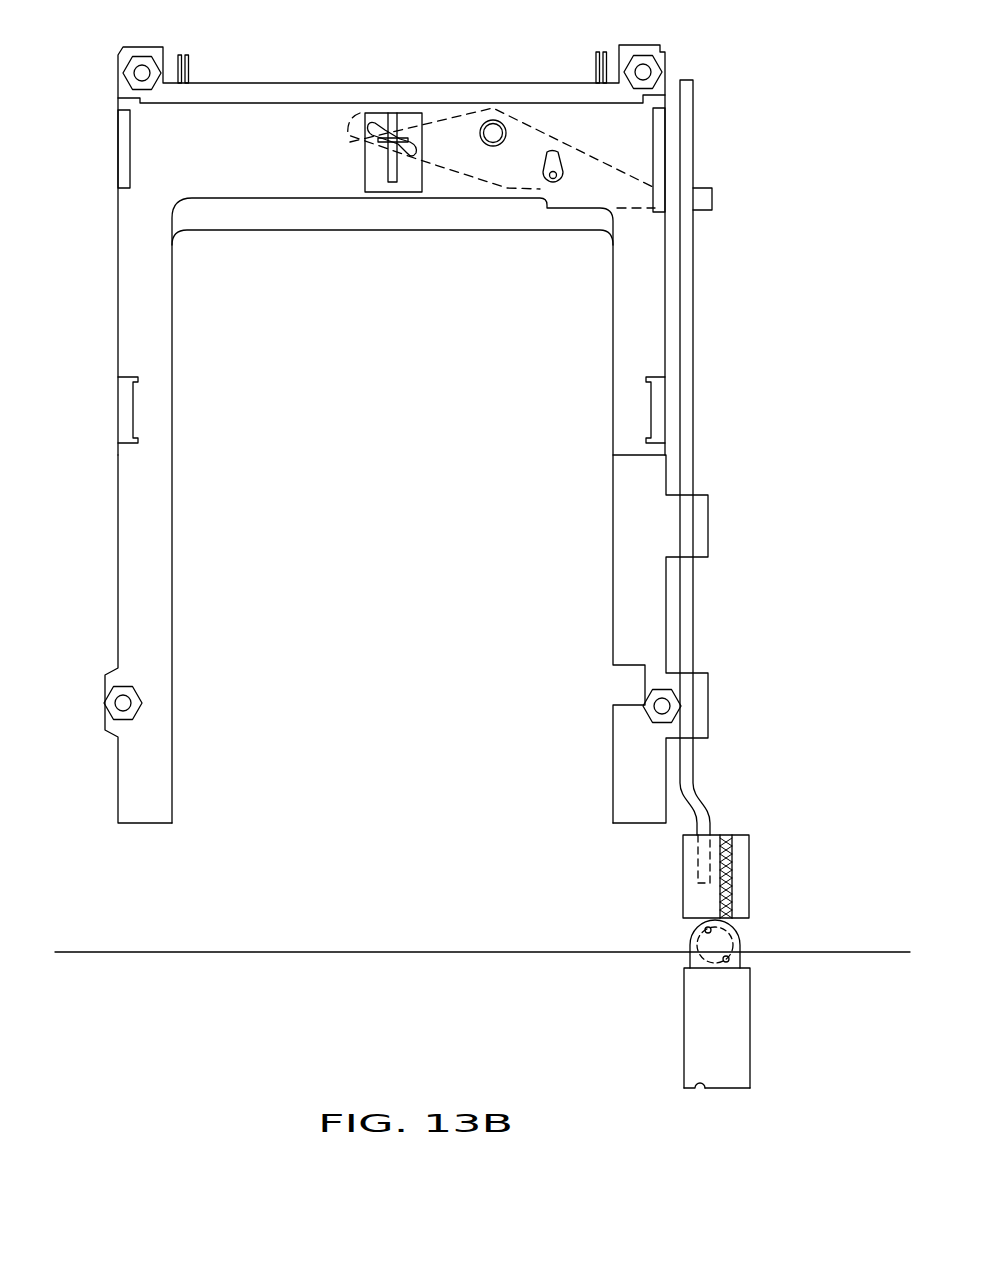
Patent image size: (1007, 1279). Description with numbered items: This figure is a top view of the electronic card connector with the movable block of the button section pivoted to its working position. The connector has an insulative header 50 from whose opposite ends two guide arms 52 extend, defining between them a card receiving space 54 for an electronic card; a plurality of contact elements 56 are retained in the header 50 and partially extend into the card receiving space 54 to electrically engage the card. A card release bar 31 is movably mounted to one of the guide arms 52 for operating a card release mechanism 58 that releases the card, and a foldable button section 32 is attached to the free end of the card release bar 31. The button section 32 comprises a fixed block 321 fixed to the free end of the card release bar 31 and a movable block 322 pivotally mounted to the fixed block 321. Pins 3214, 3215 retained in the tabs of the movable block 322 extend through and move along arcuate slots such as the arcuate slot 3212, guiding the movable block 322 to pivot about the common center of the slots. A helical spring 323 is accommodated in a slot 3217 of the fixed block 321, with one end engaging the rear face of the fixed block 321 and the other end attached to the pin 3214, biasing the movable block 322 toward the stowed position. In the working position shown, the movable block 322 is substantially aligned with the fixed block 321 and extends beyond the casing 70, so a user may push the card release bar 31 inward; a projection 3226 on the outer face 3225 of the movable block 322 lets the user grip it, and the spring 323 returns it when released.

The insulative header 50 is at (148, 53).
The contact elements 56 is at (189, 56).
The guide arms 52 is at (153, 580).
The card receiving space 54 is at (409, 463).
The card release mechanism 58 is at (465, 182).
The card release bar 31 is at (703, 817).
The foldable button section 32 is at (678, 868).
The fixed block 321 is at (698, 886).
The slot 3217 is at (728, 858).
The helical spring 323 is at (727, 888).
The arcuate slot 3212 is at (737, 937).
The pin 3215 is at (705, 933).
The pin 3214 is at (728, 962).
The movable block 322 is at (722, 1033).
The outer face 3225 is at (730, 1090).
The projection 3226 is at (689, 1092).
The casing 70 is at (408, 953).